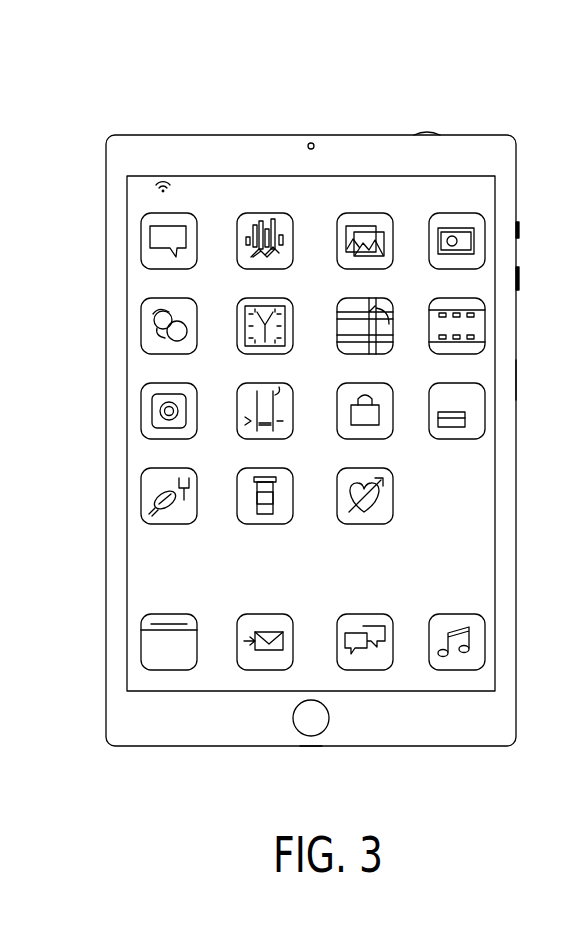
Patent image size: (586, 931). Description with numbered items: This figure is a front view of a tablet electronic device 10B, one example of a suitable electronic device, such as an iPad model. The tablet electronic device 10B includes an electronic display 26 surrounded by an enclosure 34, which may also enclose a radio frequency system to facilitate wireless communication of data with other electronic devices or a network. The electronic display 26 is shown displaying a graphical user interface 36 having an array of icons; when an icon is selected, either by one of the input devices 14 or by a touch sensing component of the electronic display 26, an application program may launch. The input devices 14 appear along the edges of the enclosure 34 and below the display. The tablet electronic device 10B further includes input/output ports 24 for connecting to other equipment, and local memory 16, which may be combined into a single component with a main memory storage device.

The tablet electronic device 10B is at (118, 98).
The input/output ports 24 is at (183, 135).
The input devices 14 is at (427, 133).
The enclosure 34 is at (517, 385).
The electronic display 26 is at (495, 432).
The graphical user interface 36 is at (469, 513).
The local memory 16 is at (311, 746).